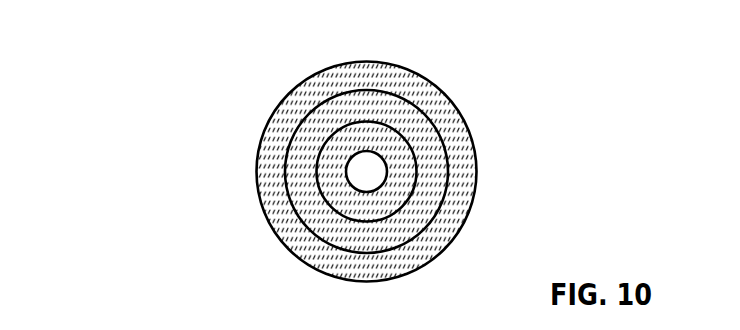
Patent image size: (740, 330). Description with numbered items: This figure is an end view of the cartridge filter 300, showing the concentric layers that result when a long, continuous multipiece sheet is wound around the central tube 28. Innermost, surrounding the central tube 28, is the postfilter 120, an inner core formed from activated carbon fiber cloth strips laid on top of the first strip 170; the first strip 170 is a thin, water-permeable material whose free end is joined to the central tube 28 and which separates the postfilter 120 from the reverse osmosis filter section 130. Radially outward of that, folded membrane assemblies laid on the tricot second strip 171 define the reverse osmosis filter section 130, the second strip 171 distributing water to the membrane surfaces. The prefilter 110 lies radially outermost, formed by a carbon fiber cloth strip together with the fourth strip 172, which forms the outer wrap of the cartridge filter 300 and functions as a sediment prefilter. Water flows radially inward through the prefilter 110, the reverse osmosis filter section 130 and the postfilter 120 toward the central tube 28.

The cartridge filter 300 is at (181, 124).
The prefilter 110 is at (396, 77).
The postfilter 120 is at (358, 210).
The reverse osmosis filter section 130 is at (315, 128).
The first strip 170 is at (408, 138).
The second strip 171 is at (288, 185).
The fourth strip 172 is at (475, 157).
The central tube 28 is at (383, 186).